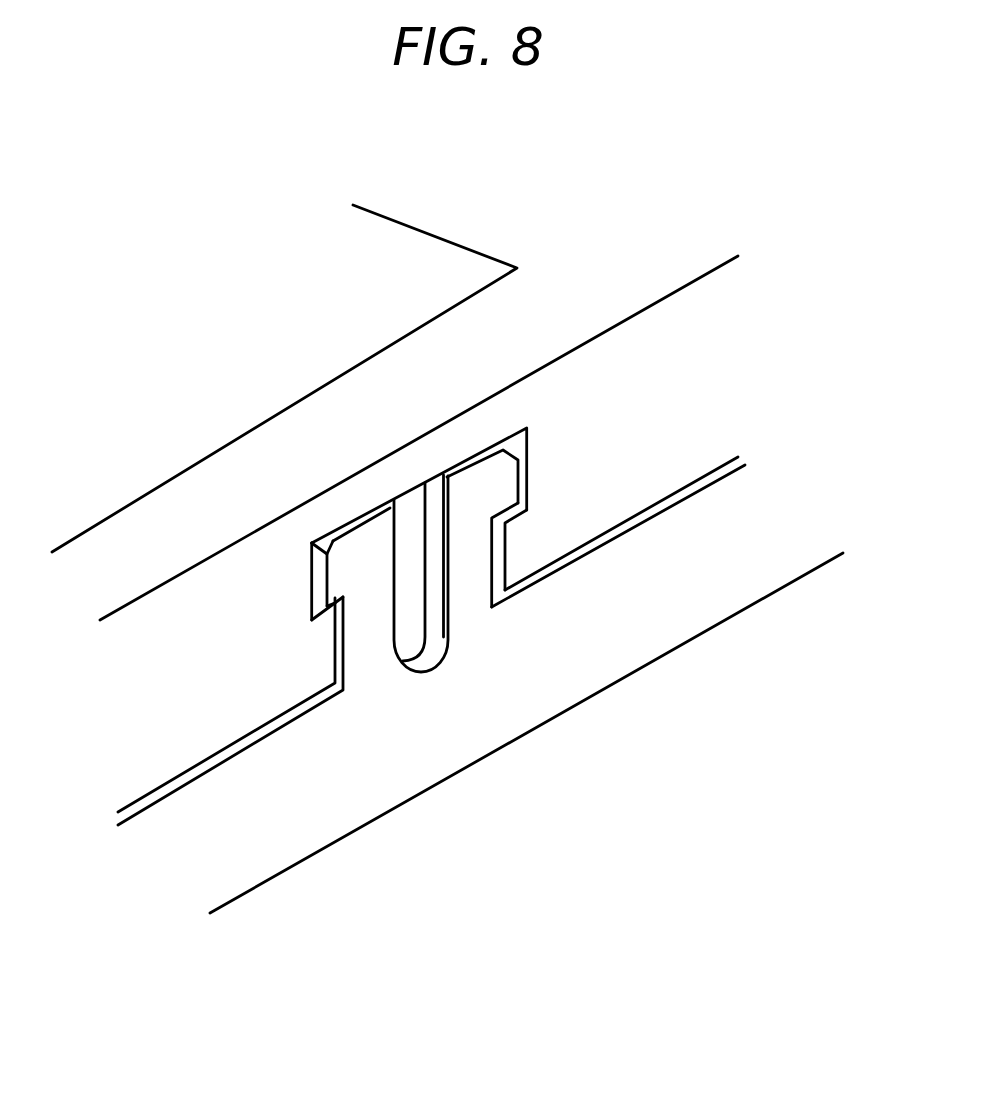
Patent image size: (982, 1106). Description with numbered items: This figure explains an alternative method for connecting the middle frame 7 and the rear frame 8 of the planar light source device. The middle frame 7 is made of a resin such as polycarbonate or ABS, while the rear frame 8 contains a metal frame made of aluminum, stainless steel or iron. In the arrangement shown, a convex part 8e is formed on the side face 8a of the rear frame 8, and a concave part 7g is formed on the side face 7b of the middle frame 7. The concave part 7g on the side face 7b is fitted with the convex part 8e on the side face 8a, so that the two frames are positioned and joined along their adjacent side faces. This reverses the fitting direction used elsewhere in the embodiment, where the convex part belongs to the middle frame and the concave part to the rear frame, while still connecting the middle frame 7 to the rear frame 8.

The middle frame 7 is at (592, 283).
The side face of the middle frame 7b is at (665, 378).
The concave part 7g is at (411, 516).
The rear frame 8 is at (377, 757).
The side face of the rear frame 8a is at (728, 560).
The convex part 8e is at (467, 588).